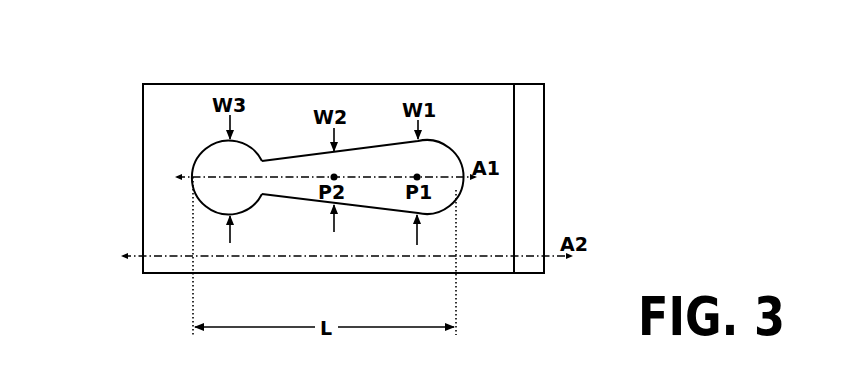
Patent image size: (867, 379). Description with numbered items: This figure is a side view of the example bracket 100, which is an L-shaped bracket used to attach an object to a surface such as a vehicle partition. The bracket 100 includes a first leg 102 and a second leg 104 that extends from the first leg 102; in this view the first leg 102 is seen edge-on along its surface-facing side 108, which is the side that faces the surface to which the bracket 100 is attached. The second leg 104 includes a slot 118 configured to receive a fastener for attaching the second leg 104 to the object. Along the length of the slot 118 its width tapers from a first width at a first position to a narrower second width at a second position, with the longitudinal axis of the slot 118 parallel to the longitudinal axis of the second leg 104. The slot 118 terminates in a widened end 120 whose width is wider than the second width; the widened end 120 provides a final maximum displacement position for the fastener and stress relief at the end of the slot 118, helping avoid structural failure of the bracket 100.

The bracket 100 is at (90, 71).
The first leg 102 is at (544, 120).
The second leg 104 is at (278, 273).
The surface-facing side 108 is at (546, 191).
The slot 118 is at (243, 212).
The widened end 120 is at (190, 151).